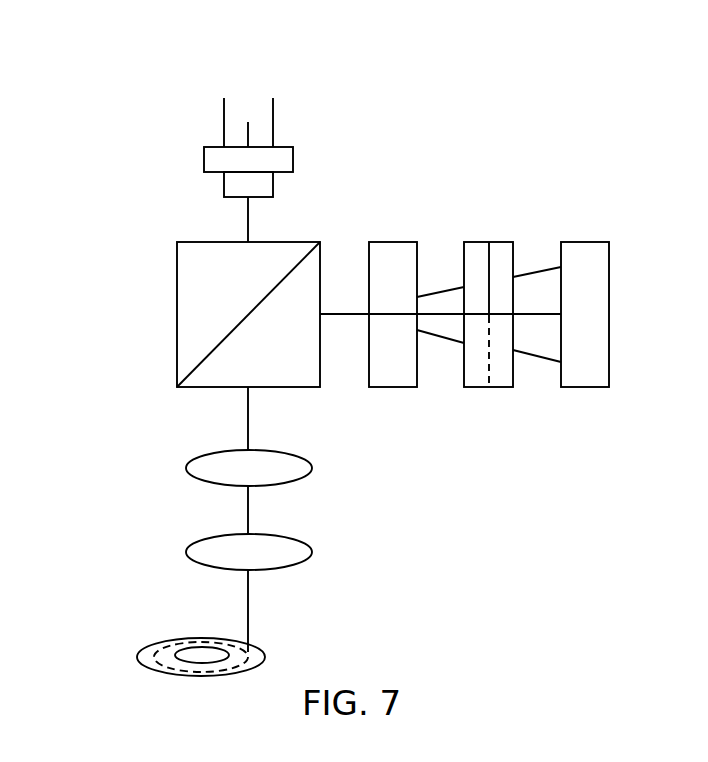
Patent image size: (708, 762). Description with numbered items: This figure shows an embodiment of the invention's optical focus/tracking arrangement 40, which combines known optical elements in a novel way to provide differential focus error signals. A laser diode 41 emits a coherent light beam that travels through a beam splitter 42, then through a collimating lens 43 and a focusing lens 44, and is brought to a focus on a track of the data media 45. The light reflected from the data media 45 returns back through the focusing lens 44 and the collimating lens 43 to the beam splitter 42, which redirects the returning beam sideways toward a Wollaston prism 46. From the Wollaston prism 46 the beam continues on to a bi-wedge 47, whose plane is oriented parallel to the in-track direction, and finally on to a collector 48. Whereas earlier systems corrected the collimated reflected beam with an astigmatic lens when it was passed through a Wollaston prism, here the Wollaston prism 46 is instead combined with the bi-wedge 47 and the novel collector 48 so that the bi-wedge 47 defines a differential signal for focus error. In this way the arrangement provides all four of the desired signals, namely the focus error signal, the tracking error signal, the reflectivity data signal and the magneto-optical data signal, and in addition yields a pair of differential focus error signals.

The optical pickup light source unit 40 is at (190, 95).
The laser diode 41 is at (205, 147).
The beam splitter 42 is at (177, 242).
The collimating lens 43 is at (181, 467).
The focusing lens 44 is at (181, 547).
The data media 45 is at (125, 655).
The Wollaston prism 46 is at (393, 241).
The bi-wedge 47 is at (488, 241).
The collector 48 is at (585, 241).